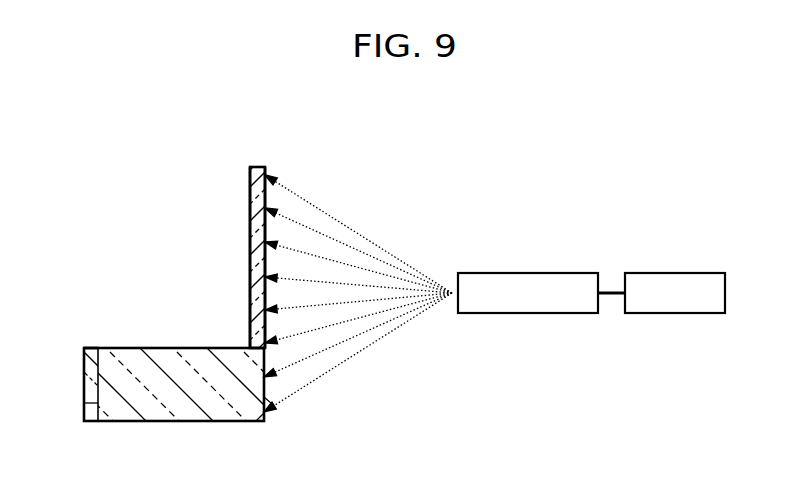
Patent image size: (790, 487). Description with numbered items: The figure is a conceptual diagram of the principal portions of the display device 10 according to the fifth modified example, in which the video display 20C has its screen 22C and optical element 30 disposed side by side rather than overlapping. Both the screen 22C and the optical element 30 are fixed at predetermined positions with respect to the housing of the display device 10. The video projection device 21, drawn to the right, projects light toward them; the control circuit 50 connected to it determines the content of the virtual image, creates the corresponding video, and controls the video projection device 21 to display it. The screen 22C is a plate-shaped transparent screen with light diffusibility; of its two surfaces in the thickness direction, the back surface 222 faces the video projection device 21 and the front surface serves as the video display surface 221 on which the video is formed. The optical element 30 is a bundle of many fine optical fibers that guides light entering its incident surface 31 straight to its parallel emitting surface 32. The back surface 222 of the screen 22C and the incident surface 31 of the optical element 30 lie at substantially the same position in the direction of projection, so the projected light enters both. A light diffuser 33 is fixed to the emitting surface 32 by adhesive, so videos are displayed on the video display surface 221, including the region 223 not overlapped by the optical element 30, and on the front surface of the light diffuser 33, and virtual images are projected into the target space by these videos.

The display device 10 is at (108, 182).
The video display 20C is at (370, 288).
The screen 22C is at (276, 165).
The video display surface 221 is at (237, 241).
The back surface 222 is at (265, 194).
The region 223 is at (229, 165).
The optical element 30 is at (166, 340).
The incident surface 31 is at (263, 420).
The emitting surface 32 is at (92, 403).
The light diffuser 33 is at (92, 362).
The video projection device 21 is at (467, 272).
The control circuit 50 is at (672, 273).